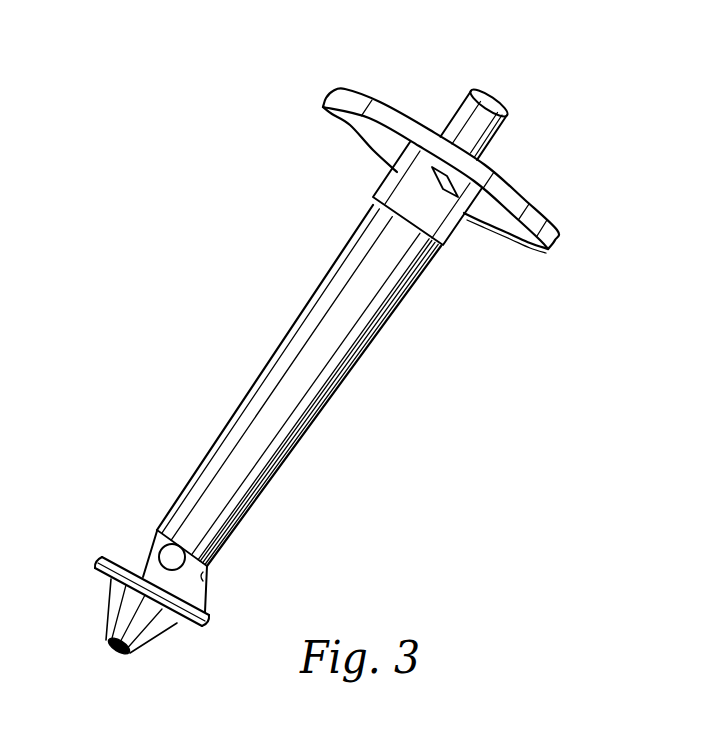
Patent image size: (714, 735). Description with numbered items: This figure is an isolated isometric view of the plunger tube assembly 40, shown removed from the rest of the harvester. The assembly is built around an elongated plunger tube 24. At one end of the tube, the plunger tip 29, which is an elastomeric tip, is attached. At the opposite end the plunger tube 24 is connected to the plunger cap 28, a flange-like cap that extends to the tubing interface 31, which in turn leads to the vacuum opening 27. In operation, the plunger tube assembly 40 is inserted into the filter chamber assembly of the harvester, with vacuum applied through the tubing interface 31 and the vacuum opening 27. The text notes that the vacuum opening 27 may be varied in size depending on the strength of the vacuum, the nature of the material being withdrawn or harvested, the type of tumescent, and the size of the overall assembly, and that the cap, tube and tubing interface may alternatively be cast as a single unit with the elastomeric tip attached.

The plunger tube 24 is at (327, 385).
The vacuum opening 27 is at (160, 537).
The plunger cap 28 is at (556, 238).
The plunger tip 29 is at (108, 633).
The tubing interface 31 is at (498, 88).
The plunger tube assembly 40 is at (598, 135).